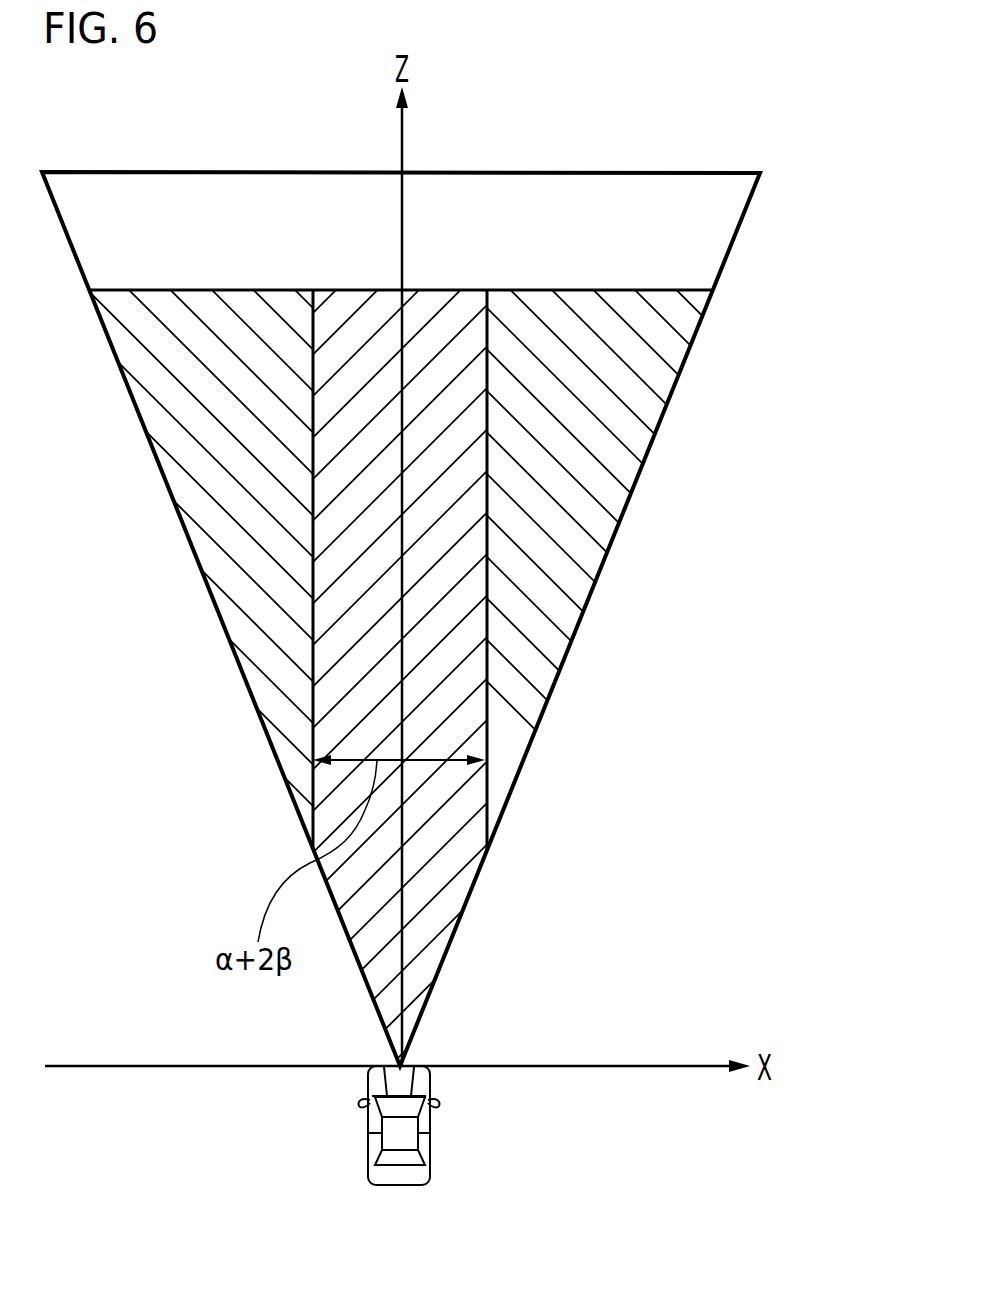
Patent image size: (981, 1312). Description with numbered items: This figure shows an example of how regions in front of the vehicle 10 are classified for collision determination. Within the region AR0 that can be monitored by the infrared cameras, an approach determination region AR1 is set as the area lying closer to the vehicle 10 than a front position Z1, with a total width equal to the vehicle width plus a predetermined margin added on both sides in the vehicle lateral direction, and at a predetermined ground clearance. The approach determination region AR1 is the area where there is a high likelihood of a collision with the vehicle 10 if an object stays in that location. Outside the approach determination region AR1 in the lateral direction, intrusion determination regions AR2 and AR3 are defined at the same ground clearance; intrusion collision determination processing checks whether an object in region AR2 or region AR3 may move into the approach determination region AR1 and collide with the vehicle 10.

The monitored region AR0 is at (735, 236).
The approach determination region AR1 is at (440, 873).
The intrusion determination region AR2 is at (593, 519).
The intrusion determination region AR3 is at (195, 462).
The front position Z1 is at (402, 290).
The vehicle 10 is at (430, 1135).